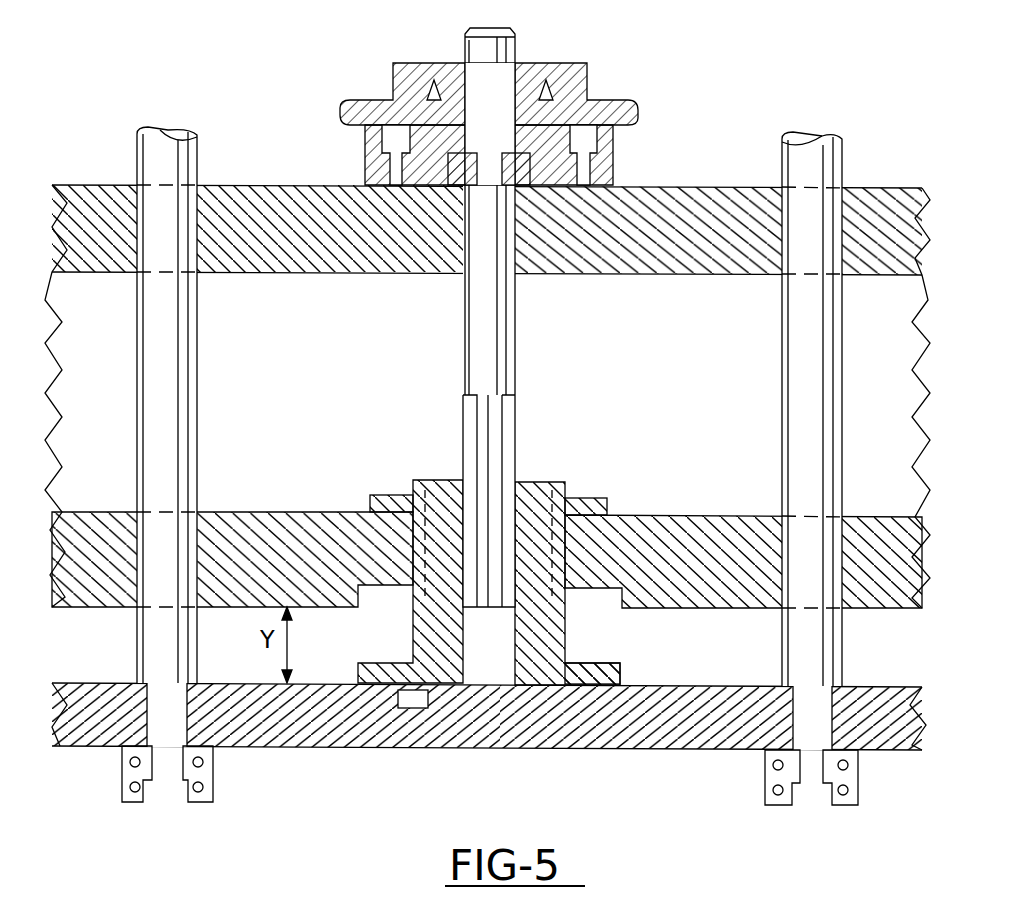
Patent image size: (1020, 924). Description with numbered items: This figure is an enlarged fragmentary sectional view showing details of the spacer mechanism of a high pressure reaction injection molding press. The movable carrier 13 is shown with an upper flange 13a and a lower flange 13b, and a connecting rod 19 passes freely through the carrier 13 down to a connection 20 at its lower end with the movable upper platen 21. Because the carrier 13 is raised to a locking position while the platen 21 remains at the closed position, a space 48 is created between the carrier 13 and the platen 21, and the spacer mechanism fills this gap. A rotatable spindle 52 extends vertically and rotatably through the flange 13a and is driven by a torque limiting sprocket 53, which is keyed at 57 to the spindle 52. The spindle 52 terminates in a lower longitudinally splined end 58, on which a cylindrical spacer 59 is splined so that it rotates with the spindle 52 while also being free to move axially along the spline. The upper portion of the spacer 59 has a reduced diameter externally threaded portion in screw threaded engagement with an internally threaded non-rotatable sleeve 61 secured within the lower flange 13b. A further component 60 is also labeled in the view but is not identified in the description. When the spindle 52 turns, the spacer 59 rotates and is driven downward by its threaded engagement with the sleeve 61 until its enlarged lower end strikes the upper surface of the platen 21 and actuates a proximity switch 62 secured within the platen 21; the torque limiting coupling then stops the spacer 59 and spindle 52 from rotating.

The carrier 13 is at (720, 393).
The flange of the carrier 13a is at (237, 270).
The lower flange of the carrier 13b is at (285, 510).
The connecting rod 19 is at (140, 650).
The connection 20 is at (122, 770).
The upper platen 21 is at (648, 742).
The space 48 is at (708, 647).
The spindle 52 is at (463, 395).
The sprocket 53 is at (603, 100).
The key 57 is at (531, 175).
The splined end 58 is at (515, 480).
The cylindrical spacer 59 is at (622, 670).
The left hub 60 is at (425, 480).
The sleeve 61 is at (610, 517).
The proximity switch 62 is at (416, 710).